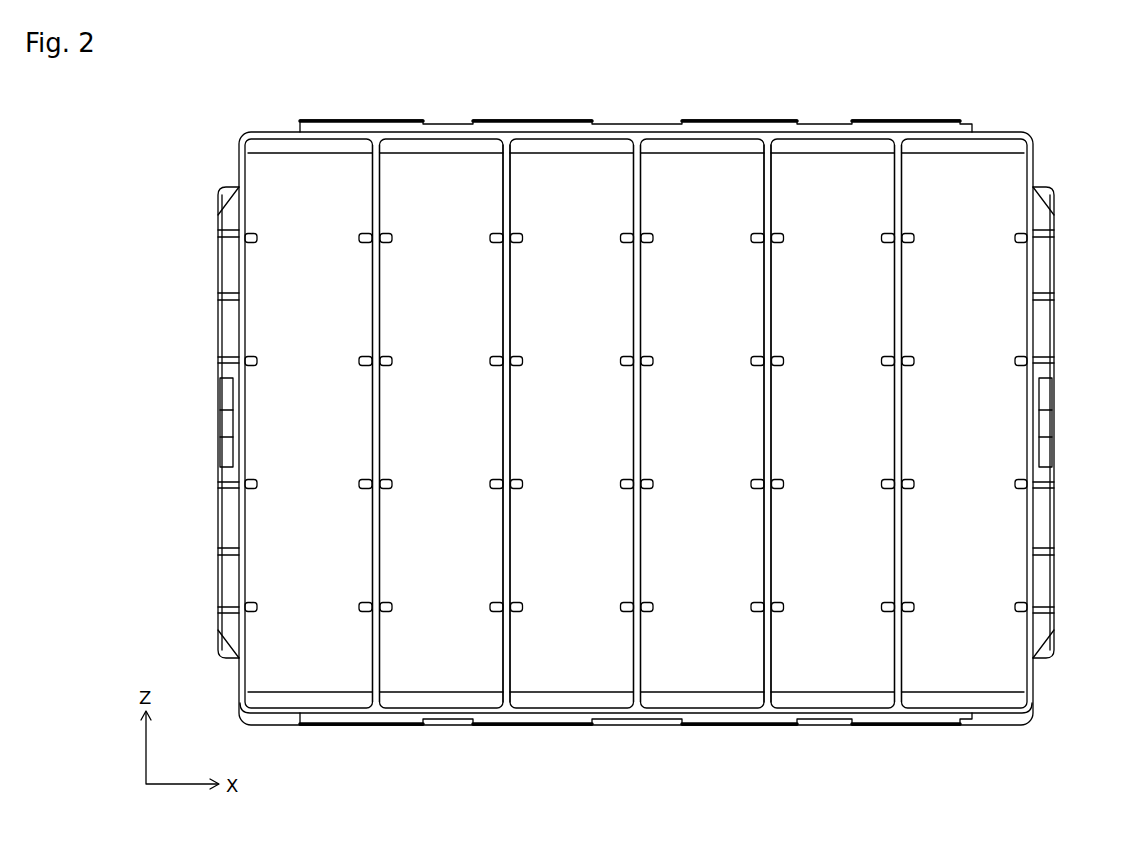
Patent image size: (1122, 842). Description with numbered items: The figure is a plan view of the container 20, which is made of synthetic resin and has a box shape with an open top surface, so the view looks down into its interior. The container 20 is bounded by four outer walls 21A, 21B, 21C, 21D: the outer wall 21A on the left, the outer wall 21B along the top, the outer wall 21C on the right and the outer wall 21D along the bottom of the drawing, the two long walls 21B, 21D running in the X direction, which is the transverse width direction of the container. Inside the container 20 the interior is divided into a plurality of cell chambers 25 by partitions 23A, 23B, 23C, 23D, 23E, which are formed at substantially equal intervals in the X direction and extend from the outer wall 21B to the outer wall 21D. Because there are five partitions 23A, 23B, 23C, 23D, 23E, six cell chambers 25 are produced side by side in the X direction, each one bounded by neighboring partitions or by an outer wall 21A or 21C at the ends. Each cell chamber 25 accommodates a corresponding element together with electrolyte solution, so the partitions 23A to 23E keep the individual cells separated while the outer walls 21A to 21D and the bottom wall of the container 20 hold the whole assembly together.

The container 20 is at (880, 79).
The outer wall 21A is at (240, 316).
The outer wall 21B is at (337, 132).
The outer wall 21C is at (1030, 326).
The outer wall 21D is at (565, 715).
The partition 23A is at (379, 191).
The partition 23B is at (509, 191).
The partition 23C is at (640, 191).
The partition 23D is at (771, 191).
The partition 23E is at (901, 191).
The cell chamber 25 is at (293, 538).